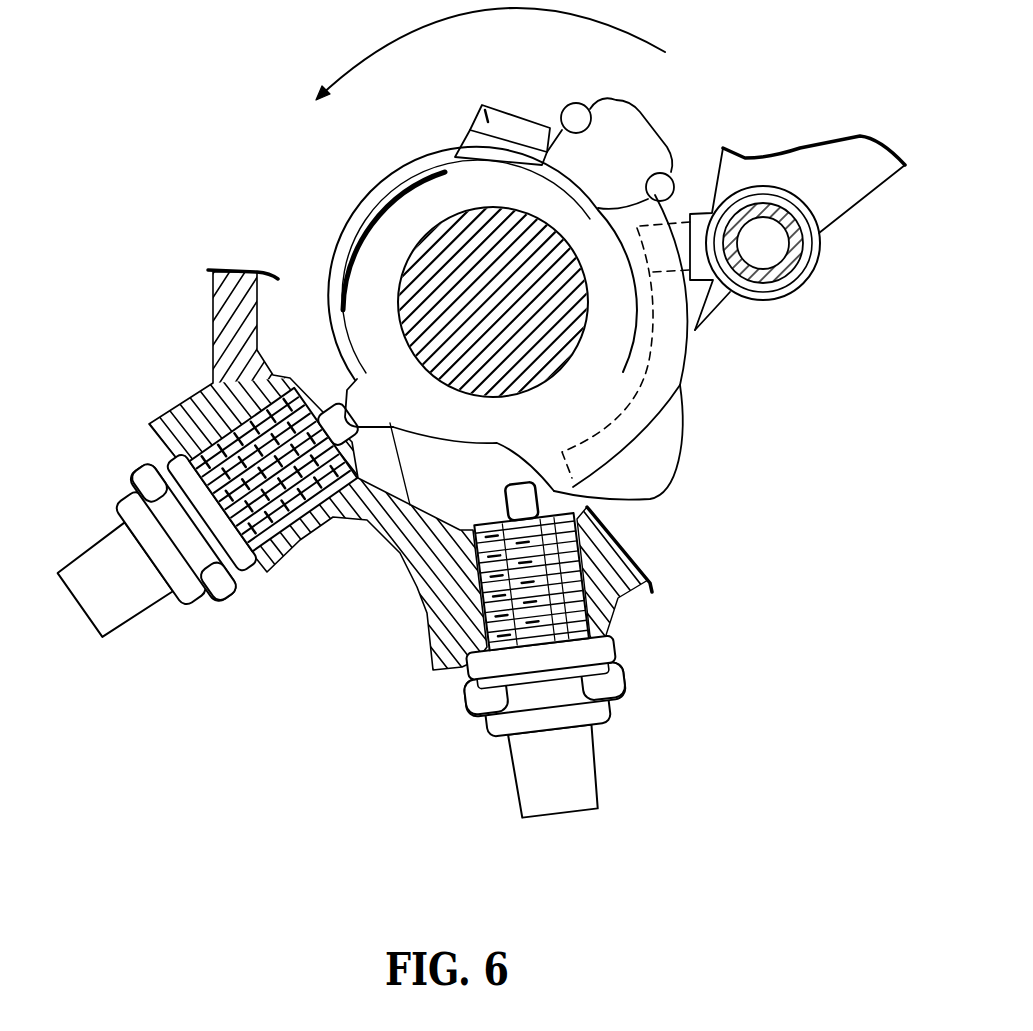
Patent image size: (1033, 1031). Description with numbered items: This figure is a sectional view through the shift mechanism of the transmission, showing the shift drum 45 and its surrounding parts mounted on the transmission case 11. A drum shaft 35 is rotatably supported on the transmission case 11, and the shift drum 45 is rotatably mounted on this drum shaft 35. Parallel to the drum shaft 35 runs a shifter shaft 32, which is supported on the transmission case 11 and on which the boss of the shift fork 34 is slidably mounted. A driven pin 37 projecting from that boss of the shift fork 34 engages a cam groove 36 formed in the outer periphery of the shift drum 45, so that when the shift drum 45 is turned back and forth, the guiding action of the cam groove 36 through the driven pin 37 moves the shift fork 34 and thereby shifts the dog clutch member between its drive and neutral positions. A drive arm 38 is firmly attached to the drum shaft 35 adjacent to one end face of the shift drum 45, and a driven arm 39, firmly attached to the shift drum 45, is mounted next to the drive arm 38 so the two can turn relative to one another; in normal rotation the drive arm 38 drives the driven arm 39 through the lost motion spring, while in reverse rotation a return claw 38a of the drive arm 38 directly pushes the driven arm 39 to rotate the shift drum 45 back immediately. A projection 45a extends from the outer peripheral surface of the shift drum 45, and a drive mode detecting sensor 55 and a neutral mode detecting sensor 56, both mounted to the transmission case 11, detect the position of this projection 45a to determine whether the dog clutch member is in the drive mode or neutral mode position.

The transmission case 11 is at (223, 327).
The shifter shaft 32 is at (782, 272).
The shift fork 34 is at (802, 160).
The drum shaft 35 is at (430, 270).
The cam groove 36 is at (650, 352).
The driven pin 37 is at (637, 240).
The drive arm 38 is at (580, 126).
The return claw 38a is at (482, 107).
The driven arm 39 is at (620, 135).
The shift drum 45 is at (672, 310).
The projection 45a is at (373, 393).
The drive mode detecting sensor 55 is at (580, 778).
The neutral mode detecting sensor 56 is at (93, 565).